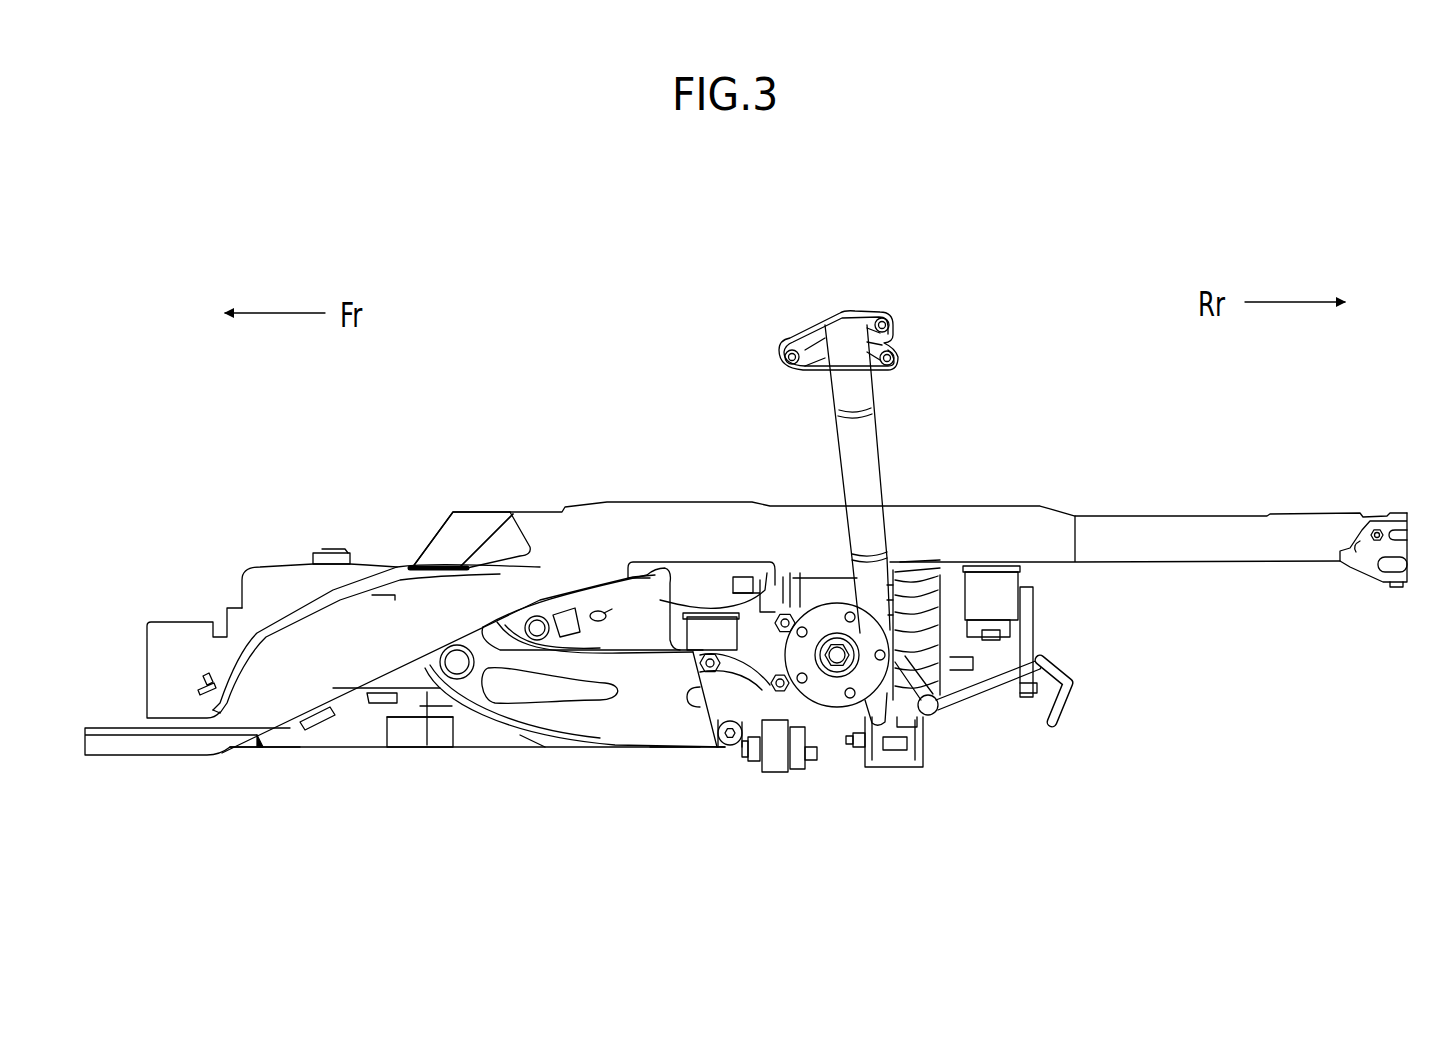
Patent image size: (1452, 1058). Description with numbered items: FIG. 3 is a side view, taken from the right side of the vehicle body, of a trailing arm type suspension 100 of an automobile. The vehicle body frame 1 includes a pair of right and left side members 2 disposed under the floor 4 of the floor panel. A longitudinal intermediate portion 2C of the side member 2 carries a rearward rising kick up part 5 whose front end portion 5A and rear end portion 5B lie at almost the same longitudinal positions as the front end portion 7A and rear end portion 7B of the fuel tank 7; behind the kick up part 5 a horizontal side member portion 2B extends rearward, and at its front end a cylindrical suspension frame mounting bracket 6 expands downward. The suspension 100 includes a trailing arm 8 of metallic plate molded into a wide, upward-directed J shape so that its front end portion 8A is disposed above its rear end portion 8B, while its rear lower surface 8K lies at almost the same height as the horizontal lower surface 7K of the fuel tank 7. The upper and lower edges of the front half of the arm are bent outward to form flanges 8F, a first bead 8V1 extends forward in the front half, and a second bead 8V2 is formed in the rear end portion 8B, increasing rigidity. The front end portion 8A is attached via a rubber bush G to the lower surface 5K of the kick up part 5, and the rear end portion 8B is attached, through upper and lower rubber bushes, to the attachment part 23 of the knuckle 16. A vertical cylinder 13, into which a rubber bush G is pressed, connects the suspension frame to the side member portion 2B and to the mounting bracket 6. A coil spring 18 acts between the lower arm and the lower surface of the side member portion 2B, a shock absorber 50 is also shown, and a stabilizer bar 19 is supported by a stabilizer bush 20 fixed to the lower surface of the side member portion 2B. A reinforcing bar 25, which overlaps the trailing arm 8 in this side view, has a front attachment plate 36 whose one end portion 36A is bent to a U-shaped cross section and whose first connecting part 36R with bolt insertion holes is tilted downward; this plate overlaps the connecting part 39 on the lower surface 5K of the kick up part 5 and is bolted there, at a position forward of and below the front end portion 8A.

The vehicle body frame 1 is at (660, 518).
The side member 2 is at (1148, 535).
The side member portion 2B is at (1205, 520).
The longitudinal intermediate portion 2C is at (382, 597).
The floor 4 is at (1205, 582).
The kick up part 5 is at (351, 645).
The front end portion of kick up part 5A is at (243, 687).
The rear end portion of kick up part 5B is at (528, 578).
The lower surface of kick up part 5K is at (412, 692).
The suspension frame mounting bracket 6 is at (707, 585).
The fuel tank 7 is at (241, 660).
The front end portion of fuel tank 7A is at (253, 587).
The rear end portion of fuel tank 7B is at (609, 602).
The horizontal lower surface of fuel tank 7K is at (275, 750).
The trailing arm 8 is at (504, 748).
The front end portion of trailing arm 8A is at (470, 690).
The rear end portion of trailing arm 8B is at (730, 745).
The flange 8F is at (556, 648).
The lower surface of trailing arm 8K is at (657, 748).
The first bead 8V1 is at (568, 697).
The second bead 8V2 is at (697, 708).
The vertical cylinder 13 is at (722, 637).
The knuckle 16 is at (775, 707).
The coil spring 18 is at (918, 600).
The stabilizer bar 19 is at (1060, 720).
The stabilizer bush 20 is at (1048, 662).
The attachment part 23 is at (770, 708).
The reinforcing bar 25 is at (442, 712).
The front attachment plate 36 is at (438, 710).
The one end portion of front attachment plate 36A is at (375, 690).
The first connecting part 36R is at (330, 715).
The connecting part 39 is at (347, 706).
The shock absorber 50 is at (846, 485).
The trailing arm type suspension 100 is at (860, 707).
The rubber bush G is at (448, 648).